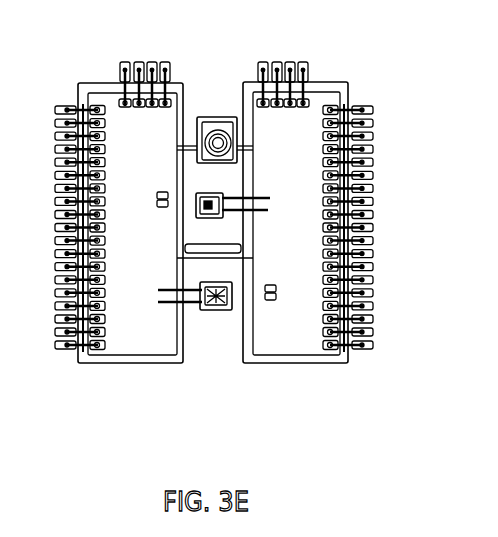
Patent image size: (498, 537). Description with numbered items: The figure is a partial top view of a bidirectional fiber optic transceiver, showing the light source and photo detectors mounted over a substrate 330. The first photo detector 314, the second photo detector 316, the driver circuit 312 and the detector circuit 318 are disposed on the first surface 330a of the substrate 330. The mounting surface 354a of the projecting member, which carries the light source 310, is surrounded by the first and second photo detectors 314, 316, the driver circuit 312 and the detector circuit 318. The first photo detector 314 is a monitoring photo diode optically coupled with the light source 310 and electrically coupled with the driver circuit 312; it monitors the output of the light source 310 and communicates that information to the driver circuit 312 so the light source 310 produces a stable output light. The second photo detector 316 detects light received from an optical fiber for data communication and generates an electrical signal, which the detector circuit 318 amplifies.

The light source 310 is at (193, 197).
The driver circuit 312 is at (278, 334).
The first photo detector 314 is at (228, 118).
The second photo detector 316 is at (216, 311).
The detector circuit 318 is at (121, 347).
The substrate 330 is at (265, 391).
The first surface 330a is at (210, 344).
The mounting surface 354a is at (228, 179).